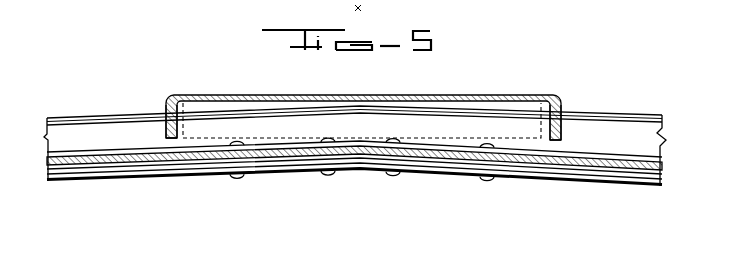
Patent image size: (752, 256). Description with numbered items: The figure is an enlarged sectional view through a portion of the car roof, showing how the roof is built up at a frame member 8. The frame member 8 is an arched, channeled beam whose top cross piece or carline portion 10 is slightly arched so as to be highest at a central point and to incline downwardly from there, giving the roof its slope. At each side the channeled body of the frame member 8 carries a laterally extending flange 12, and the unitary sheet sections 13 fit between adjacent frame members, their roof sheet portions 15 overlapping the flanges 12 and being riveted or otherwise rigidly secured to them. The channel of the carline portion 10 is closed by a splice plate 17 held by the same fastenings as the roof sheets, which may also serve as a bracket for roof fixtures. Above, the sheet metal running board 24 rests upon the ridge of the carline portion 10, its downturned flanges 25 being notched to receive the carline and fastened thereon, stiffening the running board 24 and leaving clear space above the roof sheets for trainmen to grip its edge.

The frame member 8 is at (662, 141).
The carline portion 10 is at (620, 123).
The flange 12 is at (217, 165).
The sheet section 13 is at (272, 157).
The roof sheet portion 15 is at (75, 170).
The splice plate 17 is at (427, 173).
The running board 24 is at (222, 97).
The downturned flange 25 is at (165, 120).